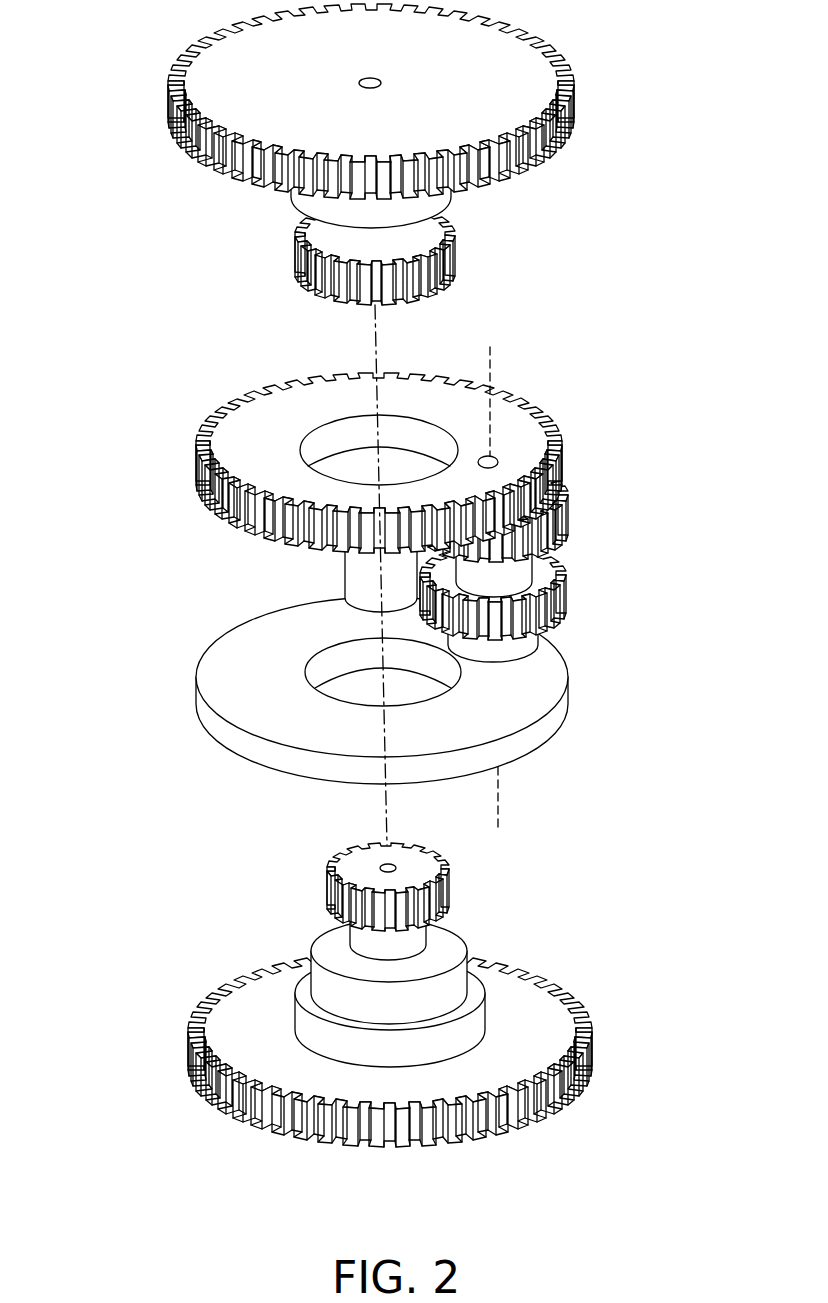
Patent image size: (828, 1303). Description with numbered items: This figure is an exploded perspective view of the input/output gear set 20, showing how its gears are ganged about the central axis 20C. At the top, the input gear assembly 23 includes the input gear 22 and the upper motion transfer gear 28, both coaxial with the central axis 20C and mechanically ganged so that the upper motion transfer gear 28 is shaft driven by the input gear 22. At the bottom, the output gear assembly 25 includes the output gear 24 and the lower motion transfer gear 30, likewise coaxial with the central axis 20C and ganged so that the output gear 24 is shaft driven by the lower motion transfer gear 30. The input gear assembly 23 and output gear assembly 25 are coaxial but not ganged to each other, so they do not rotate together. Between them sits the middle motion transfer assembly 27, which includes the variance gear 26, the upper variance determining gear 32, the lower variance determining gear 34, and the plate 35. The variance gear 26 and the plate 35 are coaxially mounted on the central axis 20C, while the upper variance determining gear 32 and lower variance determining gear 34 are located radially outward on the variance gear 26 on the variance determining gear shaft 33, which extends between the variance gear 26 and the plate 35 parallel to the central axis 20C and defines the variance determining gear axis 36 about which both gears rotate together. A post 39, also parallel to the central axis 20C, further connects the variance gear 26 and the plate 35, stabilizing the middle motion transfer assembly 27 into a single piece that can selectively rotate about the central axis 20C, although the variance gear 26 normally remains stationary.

The input/output gear set 20 is at (124, 1104).
The central axis 20C is at (373, 348).
The input gear 22 is at (170, 84).
The input gear assembly 23 is at (597, 0).
The output gear 24 is at (258, 1128).
The output gear assembly 25 is at (587, 840).
The variance gear 26 is at (540, 413).
The middle motion transfer assembly 27 is at (182, 375).
The upper motion transfer gear 28 is at (295, 262).
The lower motion transfer gear 30 is at (327, 890).
The upper variance determining gear 32 is at (548, 531).
The variance determining gear shaft 33 is at (500, 460).
The lower variance determining gear 34 is at (565, 598).
The plate 35 is at (570, 683).
The variance determining gear axis 36 is at (490, 350).
The post 39 is at (345, 580).